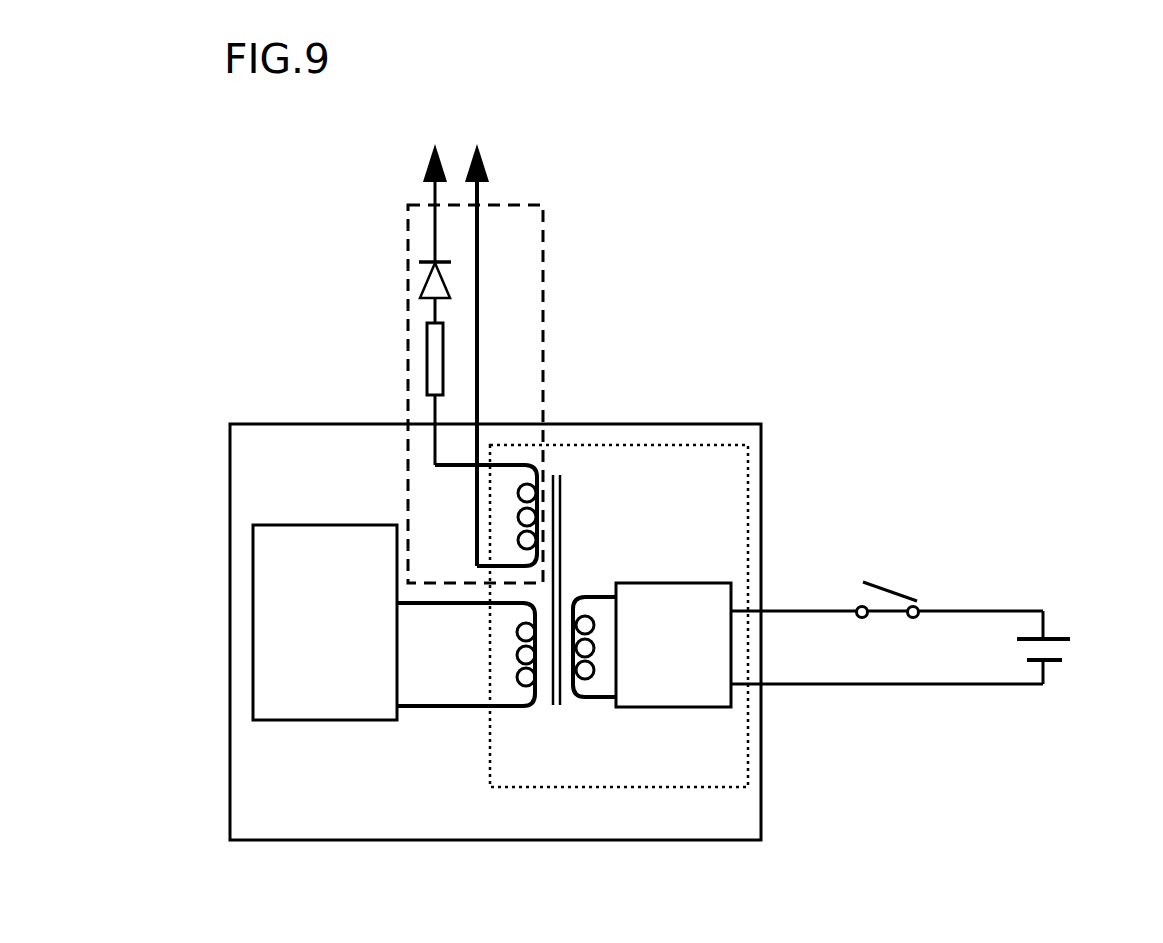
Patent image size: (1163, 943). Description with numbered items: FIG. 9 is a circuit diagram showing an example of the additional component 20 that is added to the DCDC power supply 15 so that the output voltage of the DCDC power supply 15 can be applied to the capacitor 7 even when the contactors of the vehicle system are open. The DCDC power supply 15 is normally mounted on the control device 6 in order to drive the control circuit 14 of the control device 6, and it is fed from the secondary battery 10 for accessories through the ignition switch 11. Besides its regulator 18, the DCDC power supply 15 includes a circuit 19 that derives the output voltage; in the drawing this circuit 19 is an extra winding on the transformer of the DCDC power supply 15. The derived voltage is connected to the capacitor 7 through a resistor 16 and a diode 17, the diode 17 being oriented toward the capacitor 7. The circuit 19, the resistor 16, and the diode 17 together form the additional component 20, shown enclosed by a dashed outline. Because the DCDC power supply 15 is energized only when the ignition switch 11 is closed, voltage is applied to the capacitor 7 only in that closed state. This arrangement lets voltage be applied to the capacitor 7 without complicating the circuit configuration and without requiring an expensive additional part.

The control device 6 is at (763, 816).
The capacitor 7 is at (468, 329).
The secondary battery for accessories 10 is at (1078, 654).
The ignition switch 11 is at (893, 592).
The control circuit 14 is at (253, 583).
The DCDC power supply 15 is at (723, 445).
The resistor 16 is at (427, 375).
The diode 17 is at (421, 288).
The regulator 18 is at (706, 583).
The circuit that derives output voltage 19 is at (517, 468).
The additional component 20 is at (556, 303).